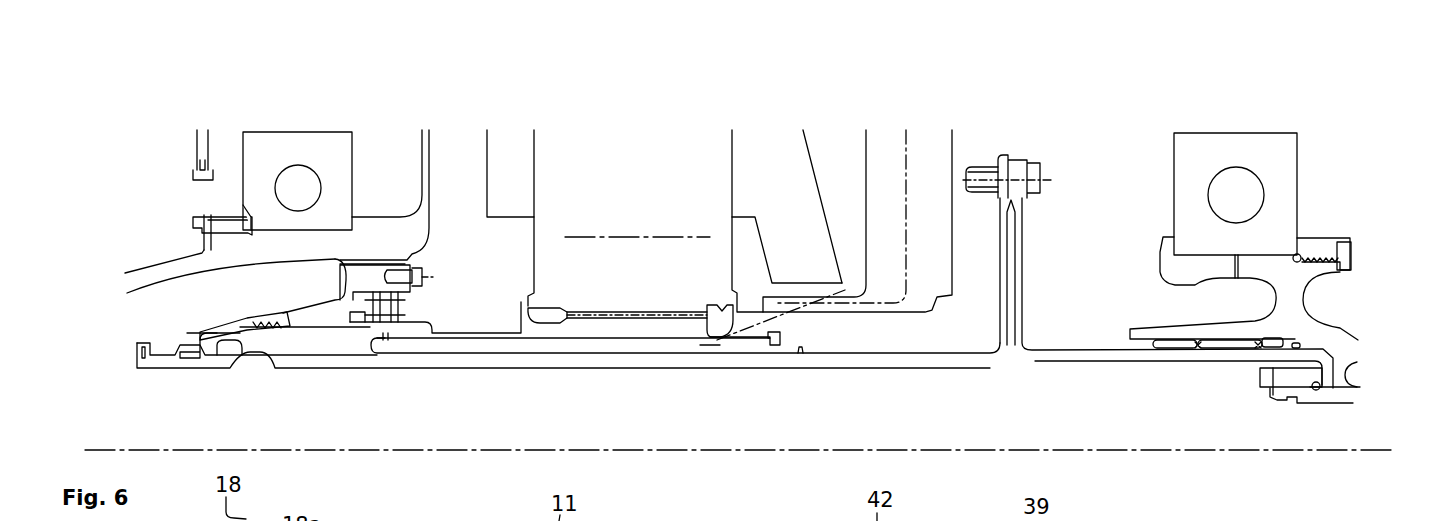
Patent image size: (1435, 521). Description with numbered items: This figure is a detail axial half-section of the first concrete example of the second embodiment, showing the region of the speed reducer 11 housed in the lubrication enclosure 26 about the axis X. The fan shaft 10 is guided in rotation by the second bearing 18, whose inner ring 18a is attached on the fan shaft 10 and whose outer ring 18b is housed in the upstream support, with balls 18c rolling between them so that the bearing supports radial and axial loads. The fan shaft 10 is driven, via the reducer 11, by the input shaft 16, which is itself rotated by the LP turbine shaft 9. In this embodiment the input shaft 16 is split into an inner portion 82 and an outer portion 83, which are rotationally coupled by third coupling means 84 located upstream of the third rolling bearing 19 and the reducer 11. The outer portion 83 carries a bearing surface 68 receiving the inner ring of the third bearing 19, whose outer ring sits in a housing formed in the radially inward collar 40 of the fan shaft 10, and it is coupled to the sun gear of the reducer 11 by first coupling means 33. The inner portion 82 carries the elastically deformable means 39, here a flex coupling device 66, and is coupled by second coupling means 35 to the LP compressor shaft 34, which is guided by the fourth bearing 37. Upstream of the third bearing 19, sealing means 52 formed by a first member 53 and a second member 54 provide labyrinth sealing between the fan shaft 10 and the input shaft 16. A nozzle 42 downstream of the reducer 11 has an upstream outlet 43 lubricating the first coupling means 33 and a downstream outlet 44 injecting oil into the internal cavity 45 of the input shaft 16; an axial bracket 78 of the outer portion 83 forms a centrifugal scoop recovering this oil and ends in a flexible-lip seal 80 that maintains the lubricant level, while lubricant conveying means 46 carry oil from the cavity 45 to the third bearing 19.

The low-pressure shaft 9 is at (1342, 392).
The fan shaft 10 is at (147, 258).
The speed reducer 11 is at (575, 182).
The input shaft 16 is at (833, 378).
The second bearing 18 is at (309, 138).
The inner ring 18a is at (303, 141).
The outer ring 18b is at (327, 222).
The rolling elements 18c is at (310, 180).
The third rolling bearing 19 is at (427, 303).
The lubrication enclosure 26 is at (496, 252).
The first coupling means 33 is at (590, 322).
The LP compressor shaft 34 is at (1320, 310).
The second coupling means 35 is at (1228, 350).
The fourth bearing 37 is at (1302, 205).
The elastically deformable means 39 is at (1030, 152).
The collar 40 is at (343, 277).
The nozzle 42 is at (888, 162).
The upstream outlet 43 is at (792, 270).
The downstream outlet 44 is at (815, 262).
The internal cavity 45 is at (496, 350).
The lubricant conveying means 46 is at (745, 353).
The sealing means 52 is at (218, 312).
The first member 53 is at (175, 342).
The second member 54 is at (280, 300).
The flex coupling device 66 is at (1030, 258).
The bearing surface 68 is at (385, 336).
The axial bracket 78 is at (743, 283).
The seal 80 is at (773, 348).
The inner portion 82 is at (438, 362).
The outer portion 83 is at (468, 340).
The third coupling means 84 is at (258, 350).
The axis X is at (1312, 452).